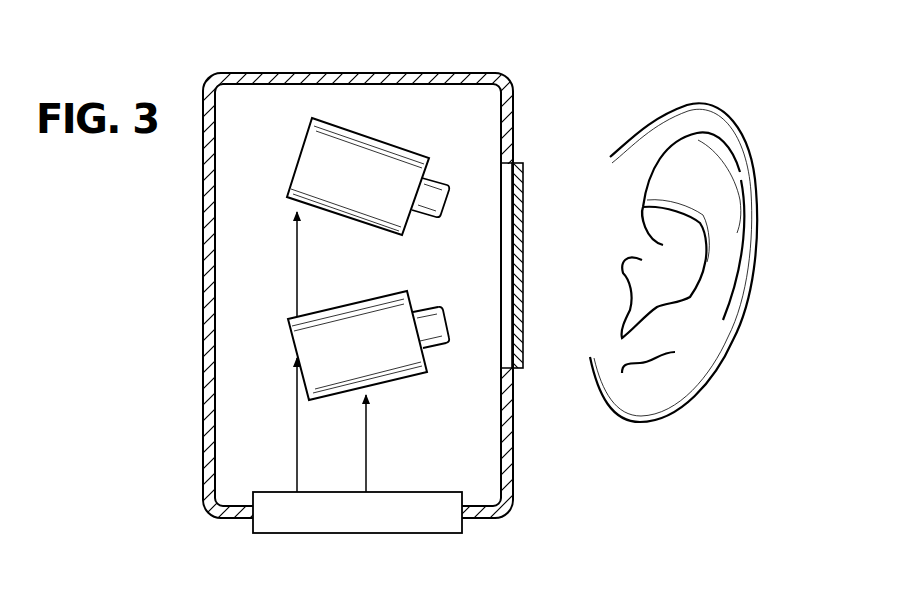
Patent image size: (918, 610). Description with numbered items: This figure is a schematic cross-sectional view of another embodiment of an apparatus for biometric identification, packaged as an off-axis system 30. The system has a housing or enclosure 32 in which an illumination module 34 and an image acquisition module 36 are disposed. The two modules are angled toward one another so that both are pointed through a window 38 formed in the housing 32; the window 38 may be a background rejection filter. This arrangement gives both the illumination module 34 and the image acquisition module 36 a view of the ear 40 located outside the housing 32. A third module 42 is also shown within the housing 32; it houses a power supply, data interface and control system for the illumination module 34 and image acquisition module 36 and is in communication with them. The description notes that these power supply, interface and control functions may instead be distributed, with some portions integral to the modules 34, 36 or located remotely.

The off-axis system 30 is at (528, 61).
The housing 32 is at (358, 72).
The illumination module 34 is at (383, 160).
The image acquisition module 36 is at (393, 365).
The window 38 is at (523, 190).
The ear 40 is at (753, 267).
The third module 42 is at (397, 527).